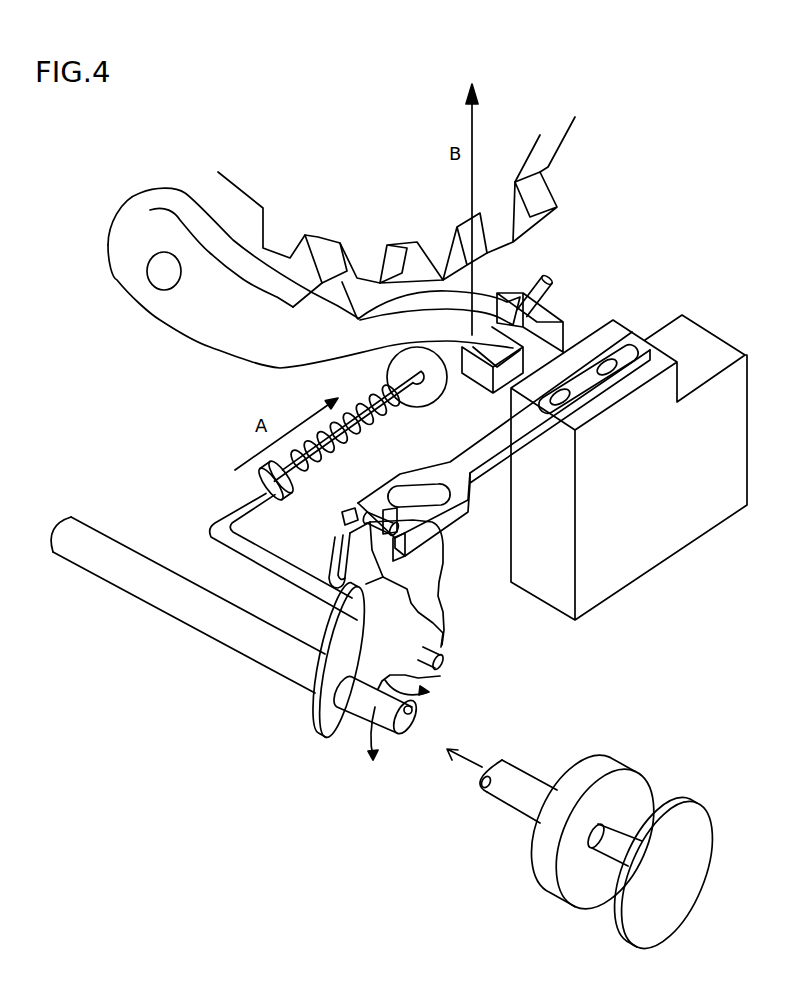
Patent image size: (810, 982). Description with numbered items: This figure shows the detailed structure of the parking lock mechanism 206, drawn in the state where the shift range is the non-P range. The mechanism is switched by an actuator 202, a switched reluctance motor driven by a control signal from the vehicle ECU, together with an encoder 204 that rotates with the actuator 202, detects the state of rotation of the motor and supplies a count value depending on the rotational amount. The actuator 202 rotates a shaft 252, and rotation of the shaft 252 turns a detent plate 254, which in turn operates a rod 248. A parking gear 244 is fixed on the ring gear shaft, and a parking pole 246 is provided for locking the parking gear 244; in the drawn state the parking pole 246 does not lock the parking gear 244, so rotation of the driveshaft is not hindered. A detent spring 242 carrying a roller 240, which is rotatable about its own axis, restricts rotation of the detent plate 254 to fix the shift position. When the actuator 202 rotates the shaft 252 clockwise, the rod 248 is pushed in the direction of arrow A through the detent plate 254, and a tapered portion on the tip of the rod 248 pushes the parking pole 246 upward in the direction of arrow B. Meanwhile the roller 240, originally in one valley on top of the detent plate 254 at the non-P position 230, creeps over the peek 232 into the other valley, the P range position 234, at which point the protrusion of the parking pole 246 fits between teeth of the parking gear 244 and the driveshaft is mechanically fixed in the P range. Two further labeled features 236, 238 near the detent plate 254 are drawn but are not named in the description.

The actuator 202 is at (613, 765).
The encoder 204 is at (684, 797).
The parking lock mechanism 206 is at (576, 270).
The non-P position 230 is at (387, 510).
The peek 232 is at (415, 583).
The P range position 234 is at (350, 528).
The hook portion 236 is at (330, 547).
The bracket 238 is at (404, 516).
The roller 240 is at (410, 547).
The detent spring 242 is at (482, 460).
The parking gear 244 is at (357, 170).
The parking pole 246 is at (183, 318).
The rod 248 is at (218, 512).
The shaft 252 is at (240, 648).
The detent plate 254 is at (348, 750).